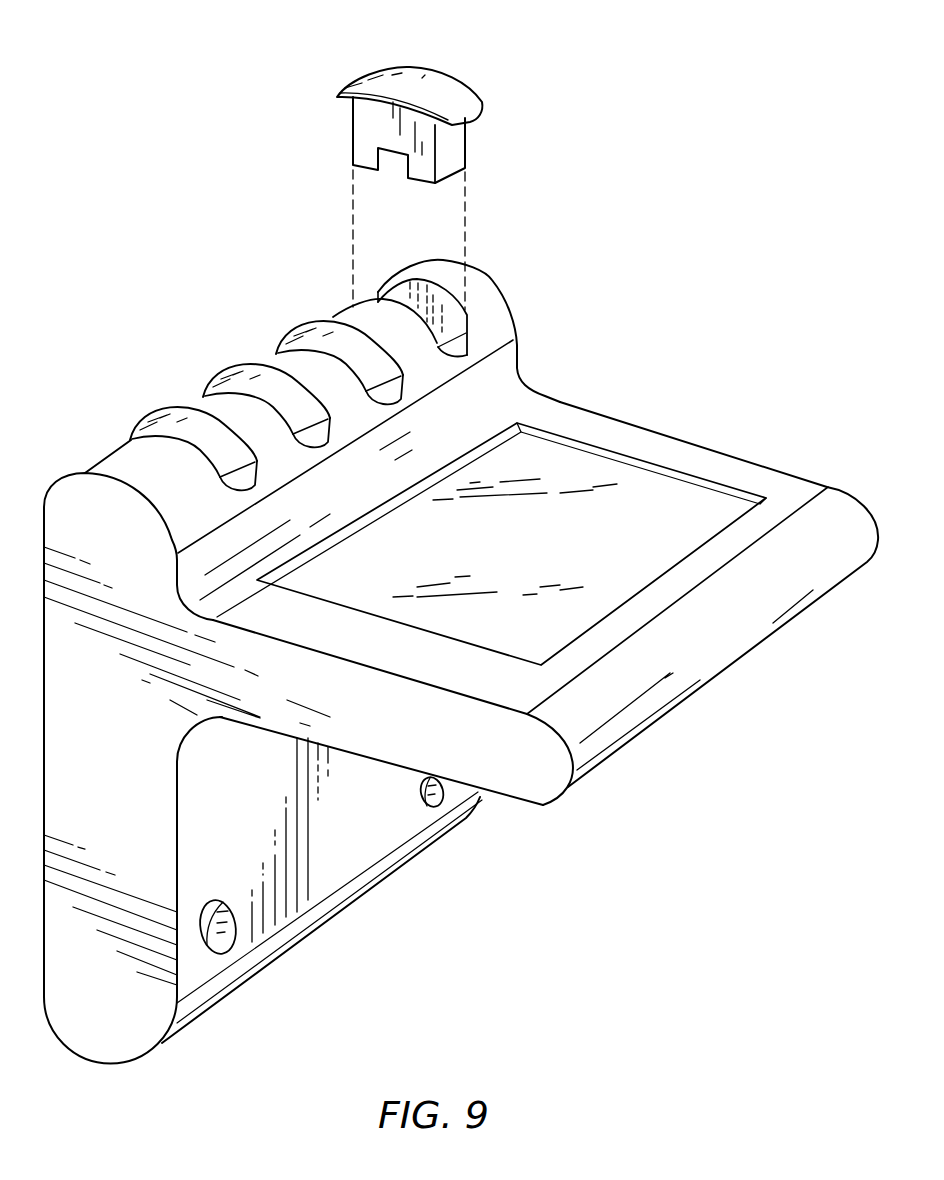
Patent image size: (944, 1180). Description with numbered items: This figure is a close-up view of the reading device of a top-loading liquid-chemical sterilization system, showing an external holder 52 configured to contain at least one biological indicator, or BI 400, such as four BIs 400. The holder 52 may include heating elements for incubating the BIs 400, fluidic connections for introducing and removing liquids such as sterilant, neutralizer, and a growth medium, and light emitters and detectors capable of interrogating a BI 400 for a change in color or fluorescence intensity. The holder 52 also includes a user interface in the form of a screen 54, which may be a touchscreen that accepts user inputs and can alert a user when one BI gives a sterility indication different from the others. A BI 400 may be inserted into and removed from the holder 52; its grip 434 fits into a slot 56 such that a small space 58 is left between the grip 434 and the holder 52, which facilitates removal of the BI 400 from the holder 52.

The holder 52 is at (712, 657).
The screen 54 is at (667, 497).
The slot 56 is at (438, 309).
The small space 58 is at (403, 382).
The BI 400 is at (460, 161).
The grip 434 is at (440, 70).